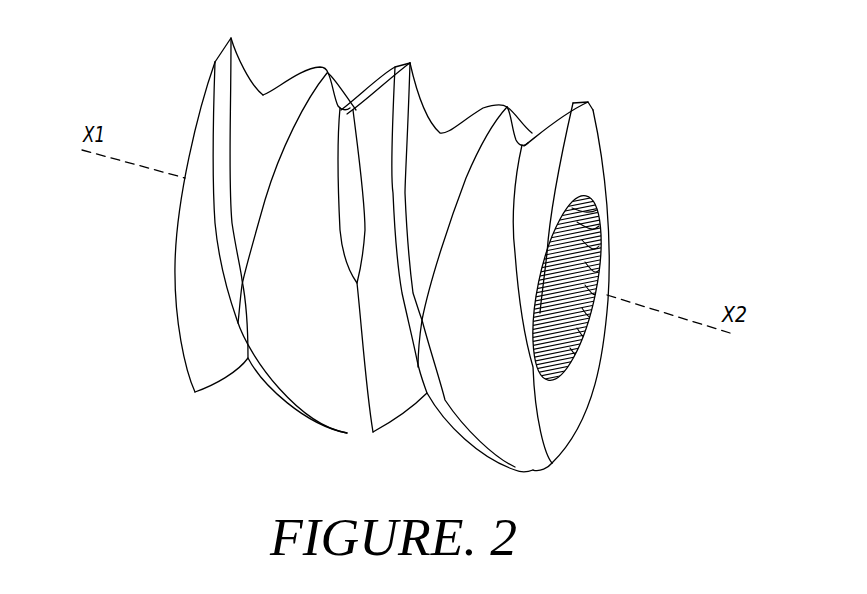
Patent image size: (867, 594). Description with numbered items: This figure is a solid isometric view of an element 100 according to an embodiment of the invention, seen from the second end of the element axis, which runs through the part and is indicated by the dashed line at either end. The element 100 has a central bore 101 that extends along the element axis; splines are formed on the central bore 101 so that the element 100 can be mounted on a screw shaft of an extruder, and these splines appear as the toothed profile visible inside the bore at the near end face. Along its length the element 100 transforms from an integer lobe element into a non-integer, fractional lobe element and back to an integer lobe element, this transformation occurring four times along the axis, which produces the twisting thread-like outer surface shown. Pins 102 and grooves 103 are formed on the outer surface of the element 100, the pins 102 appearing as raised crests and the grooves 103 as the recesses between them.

The element 100 is at (632, 82).
The central bore 101 is at (603, 223).
The pins 102 is at (495, 97).
The grooves 103 is at (520, 117).